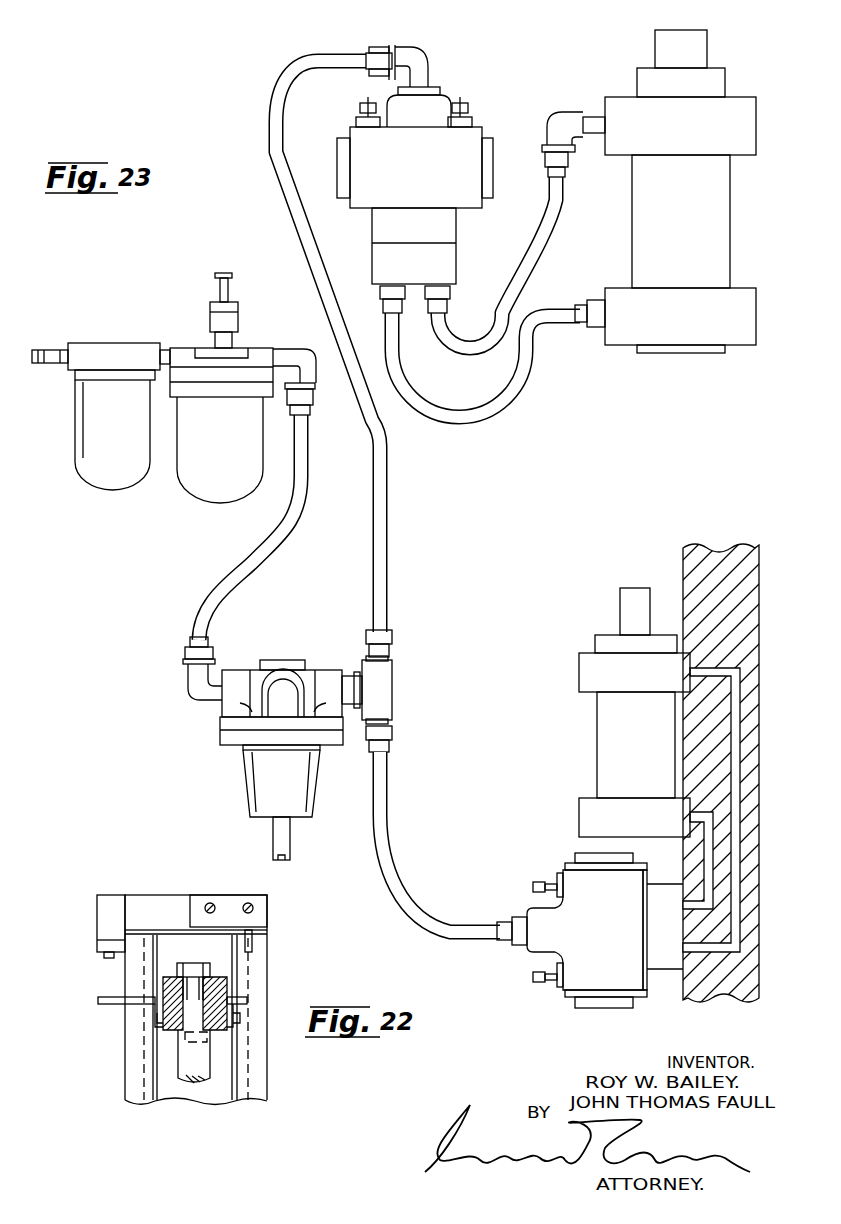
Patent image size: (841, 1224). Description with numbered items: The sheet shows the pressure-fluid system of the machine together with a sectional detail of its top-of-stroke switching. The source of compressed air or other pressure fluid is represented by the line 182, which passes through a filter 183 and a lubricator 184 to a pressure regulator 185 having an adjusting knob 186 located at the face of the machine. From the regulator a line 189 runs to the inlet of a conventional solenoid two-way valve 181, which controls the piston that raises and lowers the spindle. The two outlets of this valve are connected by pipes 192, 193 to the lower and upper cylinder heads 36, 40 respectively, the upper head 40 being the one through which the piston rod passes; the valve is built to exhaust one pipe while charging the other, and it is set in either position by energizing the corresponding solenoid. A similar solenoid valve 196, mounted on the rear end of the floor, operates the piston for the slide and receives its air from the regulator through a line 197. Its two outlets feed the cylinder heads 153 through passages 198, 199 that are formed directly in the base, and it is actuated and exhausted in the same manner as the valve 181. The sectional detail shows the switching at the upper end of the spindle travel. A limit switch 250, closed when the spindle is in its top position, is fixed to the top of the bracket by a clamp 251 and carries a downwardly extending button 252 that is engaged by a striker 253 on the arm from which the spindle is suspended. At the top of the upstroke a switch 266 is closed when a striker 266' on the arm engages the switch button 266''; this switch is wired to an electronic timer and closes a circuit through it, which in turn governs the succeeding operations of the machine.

In FIG. 23, the lower cylinder head 36 is at (630, 340).
In FIG. 23, the upper cylinder head 40 is at (628, 104).
In FIG. 23, the cylinder head 153 is at (590, 676).
In FIG. 23, the solenoid two-way valve 181 is at (461, 146).
In FIG. 23, the line 182 is at (54, 350).
In FIG. 23, the filter 183 is at (103, 480).
In FIG. 23, the lubricator 184 is at (220, 488).
In FIG. 23, the pressure regulator 185 is at (213, 752).
In FIG. 23, the adjusting knob 186 is at (266, 853).
In FIG. 23, the line 189 is at (388, 560).
In FIG. 23, the pipe 192 is at (468, 347).
In FIG. 23, the pipe 193 is at (392, 352).
In FIG. 23, the solenoid valve 196 is at (598, 985).
In FIG. 23, the line 197 is at (382, 858).
In FIG. 23, the passage 198 is at (718, 668).
In FIG. 23, the passage 199 is at (710, 920).
In FIG. 22, the limit switch 250 is at (88, 927).
In FIG. 22, the clamp 251 is at (196, 902).
In FIG. 22, the button 252 is at (104, 962).
In FIG. 22, the striker 253 is at (113, 1006).
In FIG. 22, the switch 266 is at (266, 906).
In FIG. 22, the striker 266' is at (279, 1001).
In FIG. 22, the switch button 266'' is at (290, 946).